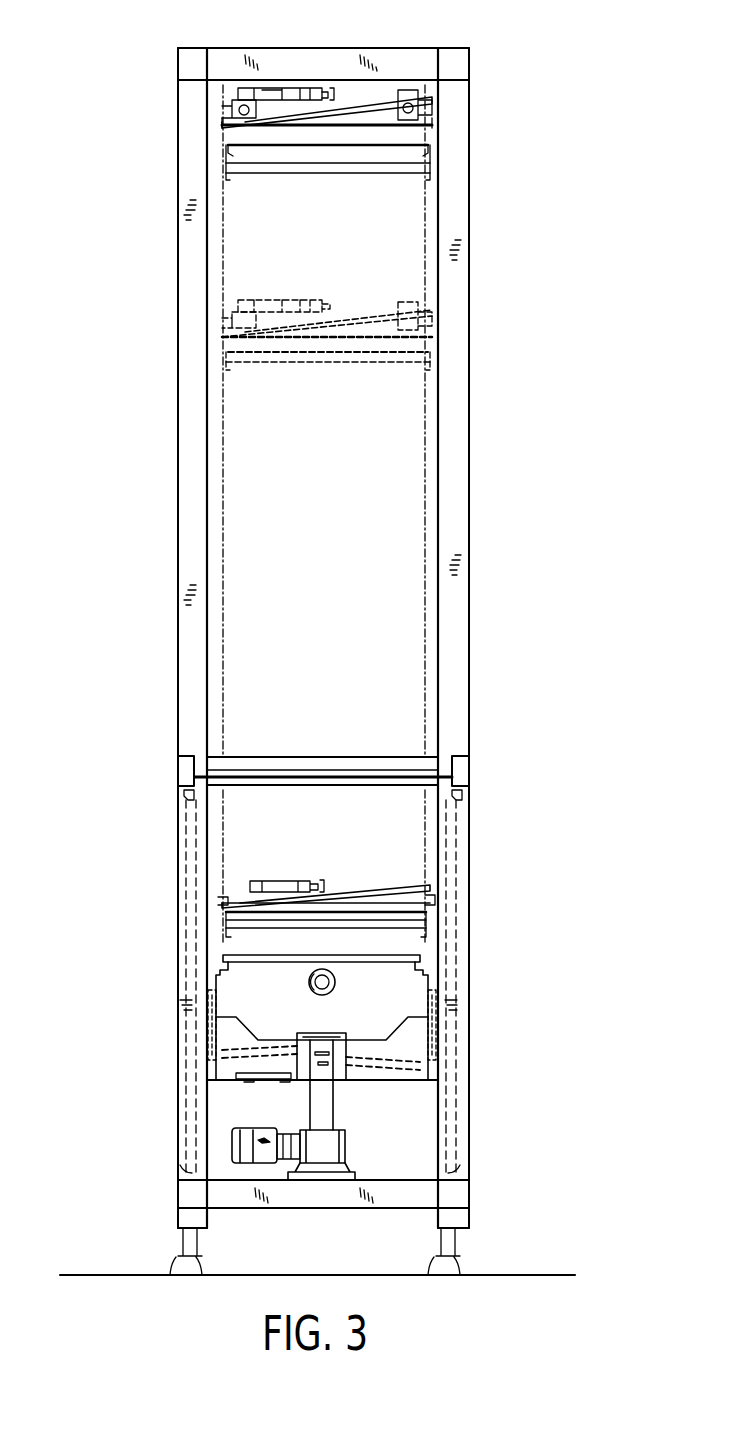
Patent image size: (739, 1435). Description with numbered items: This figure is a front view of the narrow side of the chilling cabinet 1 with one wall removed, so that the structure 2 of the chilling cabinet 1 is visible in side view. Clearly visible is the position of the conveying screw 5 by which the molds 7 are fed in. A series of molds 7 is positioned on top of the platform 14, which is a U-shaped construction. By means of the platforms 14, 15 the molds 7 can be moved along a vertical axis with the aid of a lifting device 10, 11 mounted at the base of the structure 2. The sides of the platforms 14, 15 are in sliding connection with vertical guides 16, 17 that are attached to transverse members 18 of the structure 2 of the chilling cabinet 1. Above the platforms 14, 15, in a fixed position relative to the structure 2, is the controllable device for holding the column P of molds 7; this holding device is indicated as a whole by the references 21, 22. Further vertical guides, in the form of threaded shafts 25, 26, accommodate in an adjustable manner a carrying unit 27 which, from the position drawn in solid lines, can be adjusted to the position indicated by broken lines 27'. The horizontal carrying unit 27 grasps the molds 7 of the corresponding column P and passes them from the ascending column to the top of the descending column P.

The chilling cabinet 1 is at (481, 290).
The structure 2 is at (322, 70).
The conveying screw 5 is at (337, 985).
The molds 7 is at (258, 960).
The lifting device 10 is at (426, 1106).
The lifting device 11 is at (323, 1110).
The platform 14 is at (236, 1070).
The platform 15 is at (237, 1080).
The vertical guide 16 is at (332, 987).
The vertical guide 17 is at (180, 875).
The transverse members 18 is at (320, 770).
The holding device 21 is at (326, 875).
The holding device 22 is at (326, 875).
The threaded shaft 25 is at (222, 500).
The threaded shaft 26 is at (423, 490).
The carrying unit 27 is at (267, 138).
The adjusted position of carrying unit 27' is at (266, 345).
The column of molds P is at (395, 663).